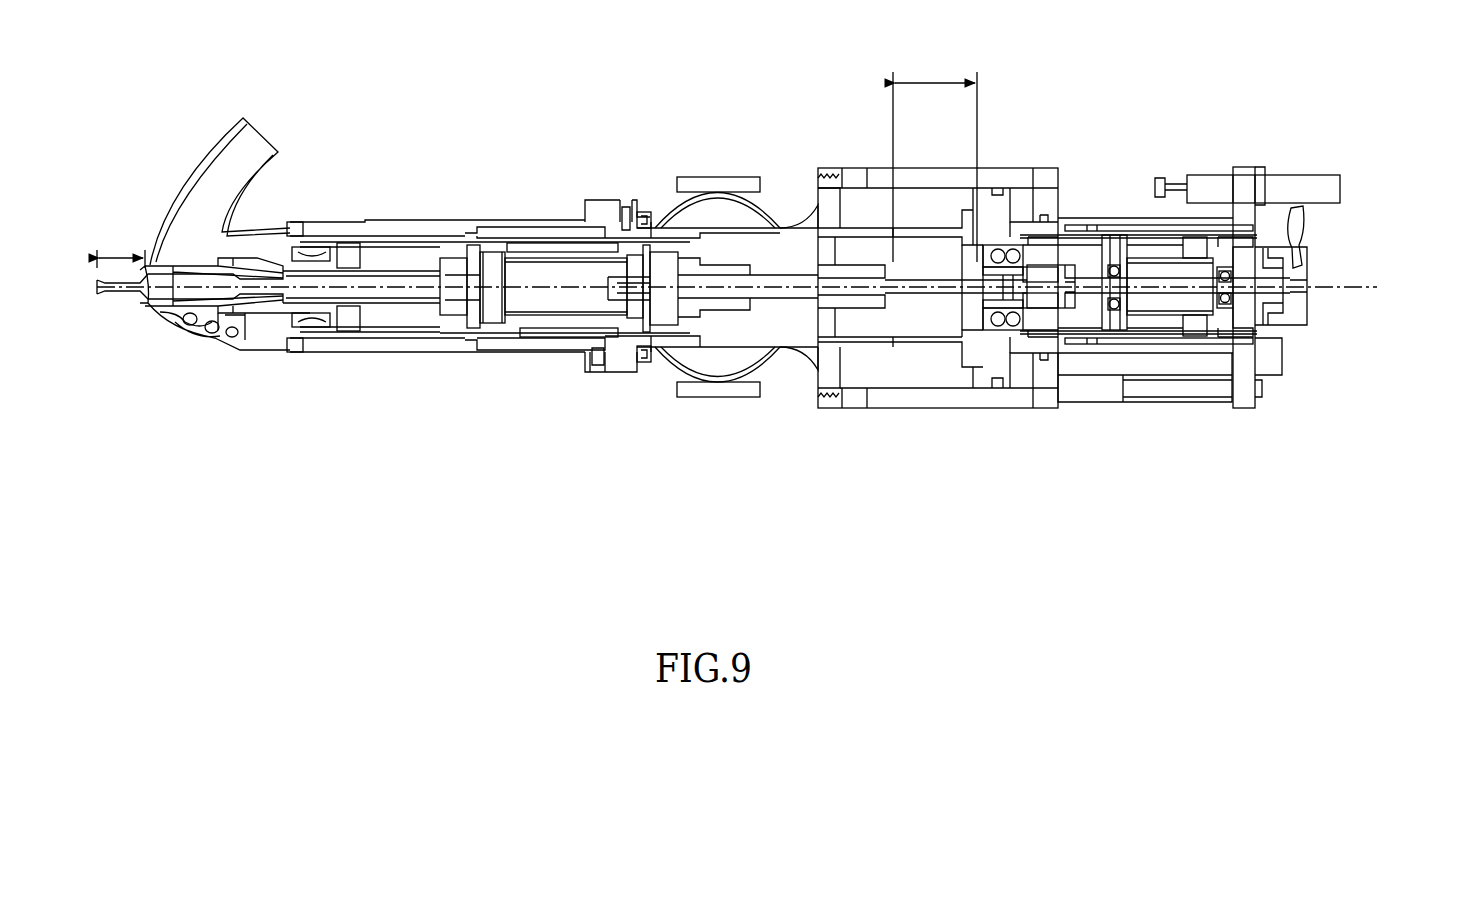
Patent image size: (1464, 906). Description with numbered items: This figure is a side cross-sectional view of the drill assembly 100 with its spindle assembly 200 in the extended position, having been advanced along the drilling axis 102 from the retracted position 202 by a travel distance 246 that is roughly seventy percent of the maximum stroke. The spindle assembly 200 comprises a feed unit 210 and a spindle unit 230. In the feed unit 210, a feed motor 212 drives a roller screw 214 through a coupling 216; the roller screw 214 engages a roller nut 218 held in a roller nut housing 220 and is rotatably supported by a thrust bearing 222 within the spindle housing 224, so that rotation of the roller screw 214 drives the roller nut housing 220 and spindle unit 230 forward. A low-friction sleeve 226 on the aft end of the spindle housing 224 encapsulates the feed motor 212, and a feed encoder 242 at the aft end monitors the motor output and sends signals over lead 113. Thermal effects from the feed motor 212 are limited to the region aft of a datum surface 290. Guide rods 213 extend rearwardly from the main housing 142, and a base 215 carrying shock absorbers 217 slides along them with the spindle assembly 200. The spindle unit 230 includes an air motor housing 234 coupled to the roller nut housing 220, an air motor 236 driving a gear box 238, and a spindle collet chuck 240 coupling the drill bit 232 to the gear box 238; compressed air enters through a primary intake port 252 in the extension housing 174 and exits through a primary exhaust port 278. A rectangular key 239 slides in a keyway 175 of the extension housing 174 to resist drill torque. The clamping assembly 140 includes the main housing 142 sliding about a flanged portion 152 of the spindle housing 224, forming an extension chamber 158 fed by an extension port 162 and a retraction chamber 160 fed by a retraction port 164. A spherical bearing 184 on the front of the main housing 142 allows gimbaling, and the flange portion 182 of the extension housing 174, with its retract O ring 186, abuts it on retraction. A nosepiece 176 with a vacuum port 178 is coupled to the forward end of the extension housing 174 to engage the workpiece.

The drill assembly 100 is at (378, 92).
The drilling axis 102 is at (122, 292).
The lead 113 is at (1306, 230).
The clamping assembly 140 is at (523, 128).
The main housing 142 is at (905, 167).
The flanged portion 152 is at (1023, 170).
The extension chamber 158 is at (1032, 212).
The retraction chamber 160 is at (858, 213).
The extension port 162 is at (1040, 200).
The retraction port 164 is at (855, 165).
The extension housing 174 is at (493, 218).
The keyway 175 is at (287, 350).
The nosepiece 176 is at (178, 318).
The vacuum port 178 is at (208, 150).
The flange portion 182 is at (592, 198).
The spherical bearing 184 is at (725, 176).
The retract O ring 186 is at (645, 362).
The spindle assembly 200 is at (1358, 223).
The retracted position 202 is at (230, 405).
The feed unit 210 is at (1212, 430).
The feed motor 212 is at (1165, 318).
The guide rods 213 is at (1088, 382).
The roller screw 214 is at (1030, 312).
The base 215 is at (1248, 382).
The coupling 216 is at (1057, 305).
The shock absorbers 217 is at (1318, 183).
The roller nut 218 is at (832, 350).
The roller nut housing 220 is at (780, 320).
The thrust bearing 222 is at (1002, 340).
The spindle housing 224 is at (868, 348).
The sleeve 226 is at (1140, 228).
The spindle unit 230 is at (510, 425).
The drill bit 232 is at (190, 282).
The air motor housing 234 is at (632, 345).
The air motor 236 is at (568, 318).
The gear box 238 is at (413, 330).
The rectangular key 239 is at (318, 342).
The spindle collet chuck 240 is at (234, 312).
The feed encoder 242 is at (1292, 328).
The travel distance 246 is at (120, 240).
The primary intake port 252 is at (627, 197).
The primary exhaust port 278 is at (598, 372).
The datum surface 290 is at (1047, 225).